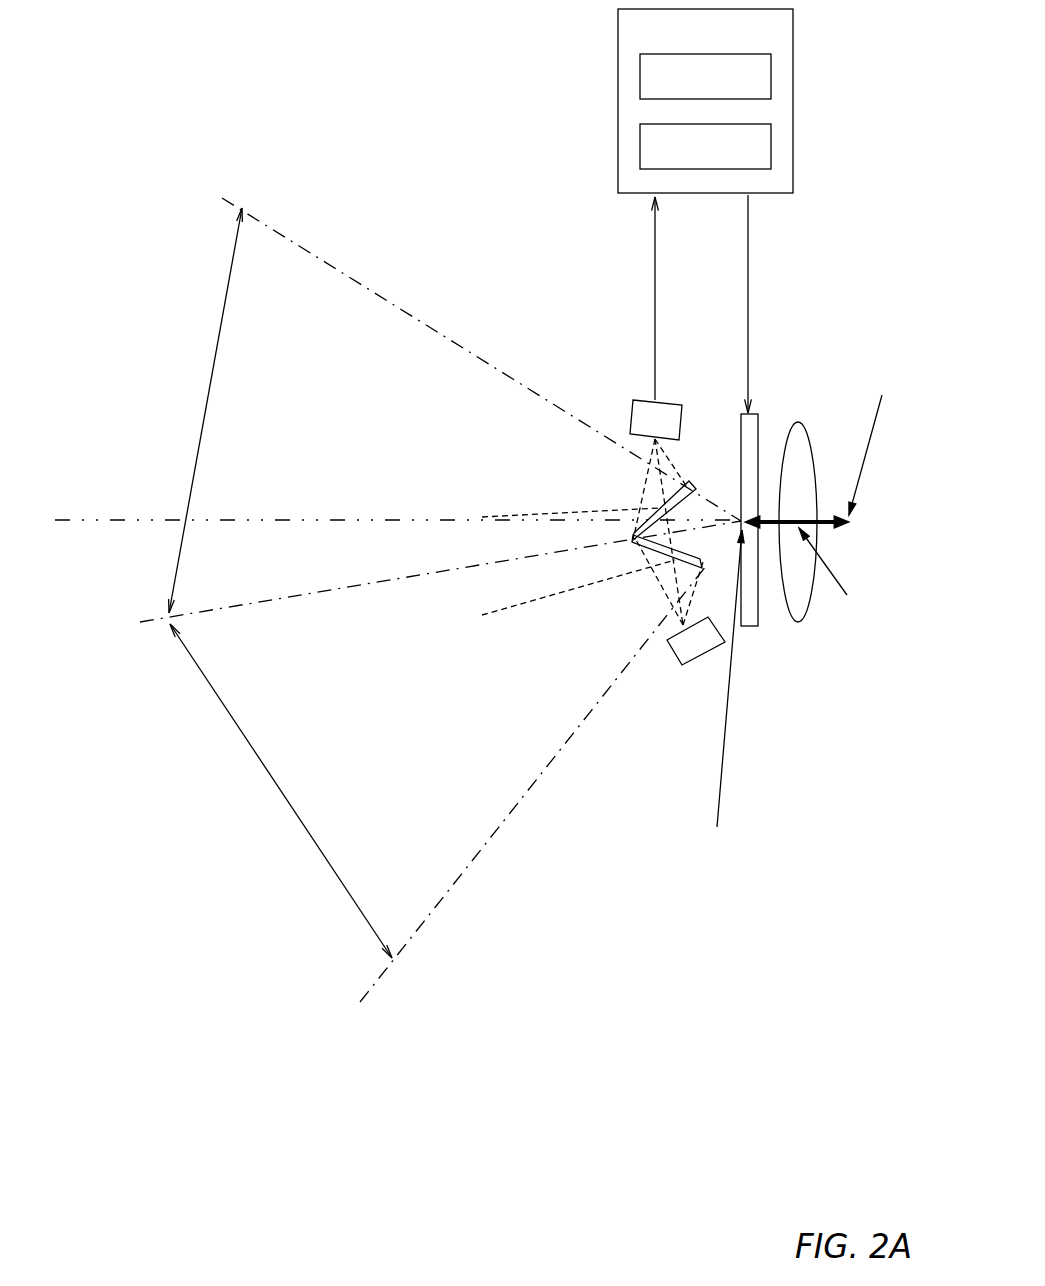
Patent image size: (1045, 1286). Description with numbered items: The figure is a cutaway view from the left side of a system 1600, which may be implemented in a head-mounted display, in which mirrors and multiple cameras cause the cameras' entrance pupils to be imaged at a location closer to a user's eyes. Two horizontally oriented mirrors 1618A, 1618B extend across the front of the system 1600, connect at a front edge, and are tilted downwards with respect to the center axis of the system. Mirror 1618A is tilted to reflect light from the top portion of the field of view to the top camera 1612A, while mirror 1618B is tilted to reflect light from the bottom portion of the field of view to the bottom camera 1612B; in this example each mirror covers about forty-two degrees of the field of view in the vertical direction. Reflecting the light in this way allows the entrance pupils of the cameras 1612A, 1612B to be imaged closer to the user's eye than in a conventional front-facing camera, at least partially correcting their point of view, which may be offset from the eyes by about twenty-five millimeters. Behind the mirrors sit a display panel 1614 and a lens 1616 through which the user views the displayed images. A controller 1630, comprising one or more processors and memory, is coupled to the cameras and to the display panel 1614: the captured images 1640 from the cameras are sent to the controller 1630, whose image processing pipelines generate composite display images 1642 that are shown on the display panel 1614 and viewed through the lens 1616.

The system 1600 is at (275, 102).
The controller 1630 is at (772, 38).
The captured images 1640 is at (611, 298).
The composite left and right images 1642 is at (786, 304).
The top camera 1612A is at (680, 433).
The bottom camera 1612B is at (718, 651).
The mirror 1618A is at (698, 484).
The mirror 1618B is at (657, 556).
The display panel 1614 is at (752, 628).
The lens 1616 is at (800, 630).